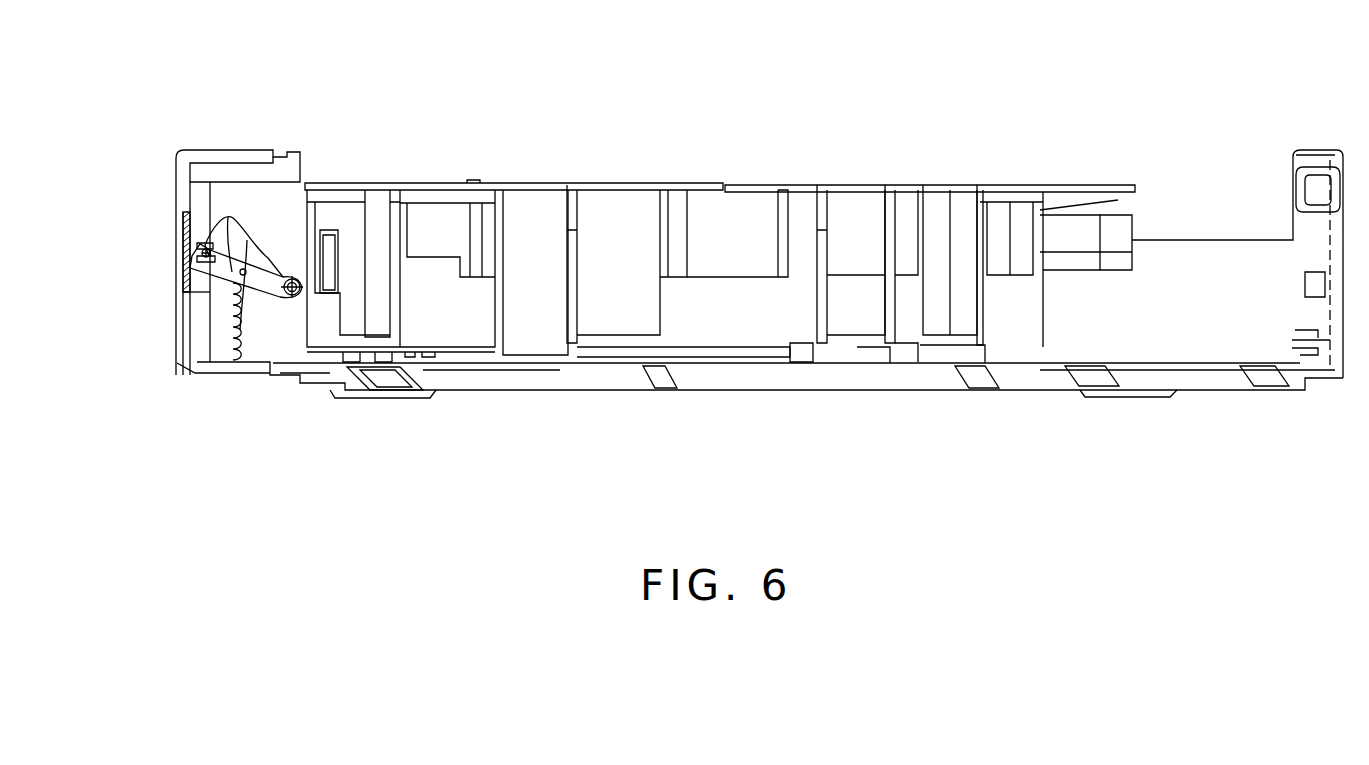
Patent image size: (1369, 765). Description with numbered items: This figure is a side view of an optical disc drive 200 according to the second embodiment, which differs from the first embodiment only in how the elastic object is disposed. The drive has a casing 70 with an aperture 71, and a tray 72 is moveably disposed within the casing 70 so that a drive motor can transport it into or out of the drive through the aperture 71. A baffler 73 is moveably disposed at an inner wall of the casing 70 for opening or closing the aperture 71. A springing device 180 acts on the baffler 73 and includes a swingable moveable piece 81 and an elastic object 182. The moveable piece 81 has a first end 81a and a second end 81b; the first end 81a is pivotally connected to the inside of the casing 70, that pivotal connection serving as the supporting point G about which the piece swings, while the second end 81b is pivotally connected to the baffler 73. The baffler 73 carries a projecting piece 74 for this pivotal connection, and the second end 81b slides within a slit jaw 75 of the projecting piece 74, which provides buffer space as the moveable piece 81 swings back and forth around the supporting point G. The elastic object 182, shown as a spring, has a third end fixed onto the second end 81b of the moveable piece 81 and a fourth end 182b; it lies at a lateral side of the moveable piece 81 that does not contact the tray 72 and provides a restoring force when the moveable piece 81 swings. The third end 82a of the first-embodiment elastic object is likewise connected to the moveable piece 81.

The optical disc drive 200 is at (1352, 67).
The casing 70 is at (177, 340).
The aperture 71 is at (173, 212).
The tray 72 is at (1117, 230).
The baffler 73 is at (193, 245).
The projecting piece 74 is at (199, 252).
The slit jaw 75 is at (200, 259).
The springing device 180 is at (385, 97).
The moveable piece 81 is at (247, 237).
The first end 81a is at (292, 285).
The second end 81b is at (203, 247).
The third end 82a is at (229, 240).
The elastic object 182 is at (267, 252).
The fourth end 182b is at (232, 363).
The supporting point G is at (293, 298).